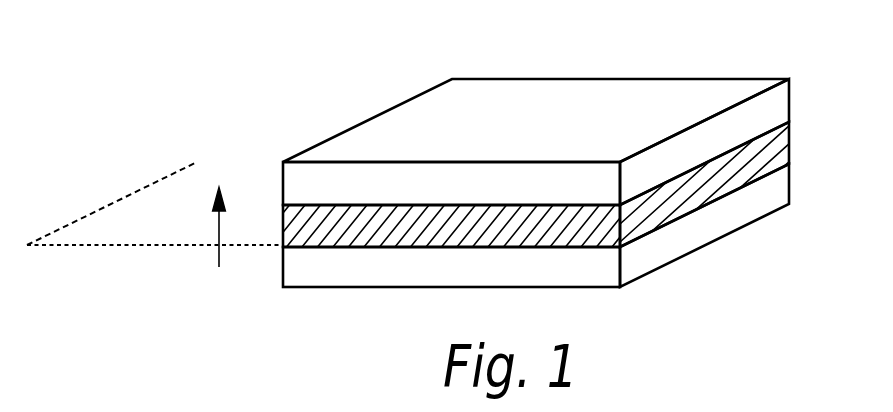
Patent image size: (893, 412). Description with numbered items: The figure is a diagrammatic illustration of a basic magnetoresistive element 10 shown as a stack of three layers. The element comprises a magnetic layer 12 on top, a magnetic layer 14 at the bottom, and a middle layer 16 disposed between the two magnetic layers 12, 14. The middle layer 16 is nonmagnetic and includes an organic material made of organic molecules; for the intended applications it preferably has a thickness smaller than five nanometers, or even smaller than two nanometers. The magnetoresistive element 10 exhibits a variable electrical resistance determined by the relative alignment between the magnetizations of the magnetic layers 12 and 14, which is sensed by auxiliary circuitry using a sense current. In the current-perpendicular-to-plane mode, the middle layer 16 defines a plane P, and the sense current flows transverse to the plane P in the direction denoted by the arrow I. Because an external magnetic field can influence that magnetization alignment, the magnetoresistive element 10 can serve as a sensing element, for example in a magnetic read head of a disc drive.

The magnetoresistive element 10 is at (566, 146).
The magnetic layer 12 is at (765, 110).
The magnetic layer 14 is at (770, 199).
The middle layer 16 is at (790, 146).
The plane P is at (155, 203).
The arrow I is at (205, 227).